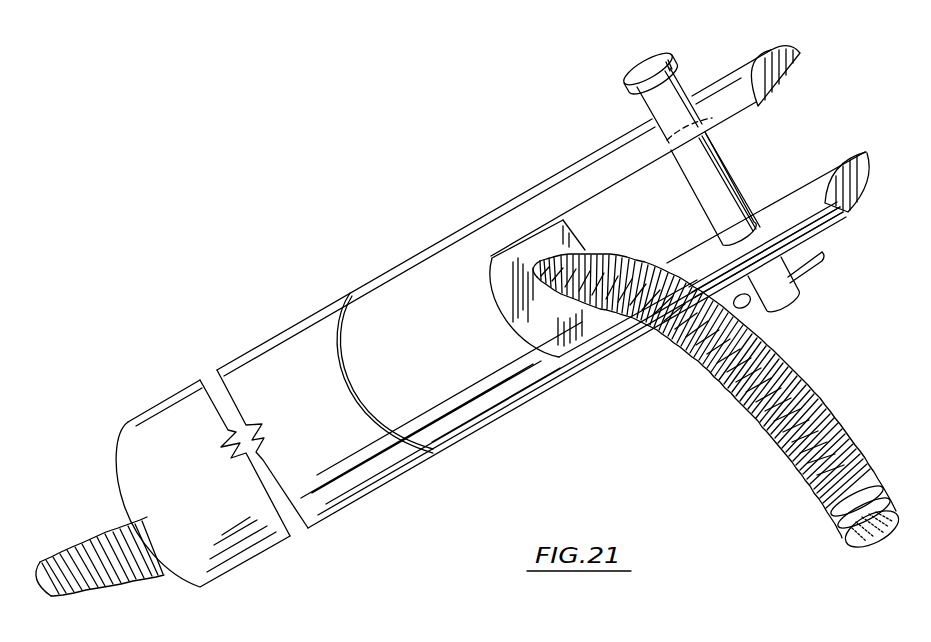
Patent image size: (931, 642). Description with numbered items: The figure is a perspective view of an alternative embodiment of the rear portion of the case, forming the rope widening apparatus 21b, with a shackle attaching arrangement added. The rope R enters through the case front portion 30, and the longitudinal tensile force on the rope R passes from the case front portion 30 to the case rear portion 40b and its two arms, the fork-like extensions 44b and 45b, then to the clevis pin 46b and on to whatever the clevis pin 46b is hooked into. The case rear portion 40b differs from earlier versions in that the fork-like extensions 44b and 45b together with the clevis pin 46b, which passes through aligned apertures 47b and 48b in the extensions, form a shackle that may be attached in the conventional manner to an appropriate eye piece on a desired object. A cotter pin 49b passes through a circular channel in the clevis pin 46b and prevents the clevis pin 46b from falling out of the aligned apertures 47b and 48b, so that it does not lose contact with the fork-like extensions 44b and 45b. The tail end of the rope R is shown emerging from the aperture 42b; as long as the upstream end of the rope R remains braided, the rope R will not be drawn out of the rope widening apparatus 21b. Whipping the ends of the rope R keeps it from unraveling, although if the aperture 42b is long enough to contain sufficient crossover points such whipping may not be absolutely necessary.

The case front portion 30 is at (258, 362).
The rope widening apparatus 21b is at (362, 270).
The case rear portion 40b is at (490, 424).
The aperture 42b is at (550, 307).
The fork-like extension 44b is at (728, 76).
The fork-like extension 45b is at (835, 218).
The clevis pin 46b is at (652, 70).
The aperture 47b is at (712, 118).
The aperture 48b is at (755, 223).
The cotter pin 49b is at (821, 275).
The rope R is at (787, 447).